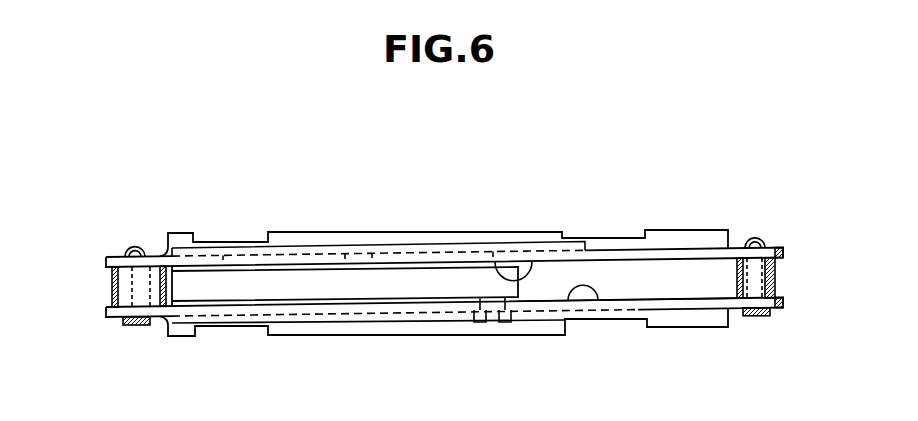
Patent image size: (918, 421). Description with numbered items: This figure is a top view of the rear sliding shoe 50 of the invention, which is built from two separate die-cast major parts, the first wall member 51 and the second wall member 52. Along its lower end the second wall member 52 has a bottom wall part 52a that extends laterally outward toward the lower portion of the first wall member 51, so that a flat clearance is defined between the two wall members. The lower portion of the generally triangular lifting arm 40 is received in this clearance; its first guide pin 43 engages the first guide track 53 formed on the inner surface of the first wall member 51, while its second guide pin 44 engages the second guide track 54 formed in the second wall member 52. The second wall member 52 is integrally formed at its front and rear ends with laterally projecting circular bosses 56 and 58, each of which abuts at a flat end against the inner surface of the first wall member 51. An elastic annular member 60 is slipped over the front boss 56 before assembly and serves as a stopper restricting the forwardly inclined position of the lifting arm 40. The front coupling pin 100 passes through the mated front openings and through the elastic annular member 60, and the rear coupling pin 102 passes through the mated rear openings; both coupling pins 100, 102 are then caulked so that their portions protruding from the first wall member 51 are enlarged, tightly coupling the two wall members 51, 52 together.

The lifting arm 40 is at (347, 285).
The first guide pin 43 is at (359, 253).
The second guide pin 44 is at (496, 300).
The rear sliding shoe 50 is at (690, 225).
The first wall member 51 is at (436, 248).
The second wall member 52 is at (419, 312).
The bottom wall part 52a is at (685, 292).
The first guide track 53 is at (521, 262).
The second guide track 54 is at (597, 300).
The front circular boss 56 is at (110, 278).
The rear circular boss 58 is at (777, 277).
The elastic annular member 60 is at (110, 294).
The front coupling pin 100 is at (142, 328).
The rear coupling pin 102 is at (757, 316).